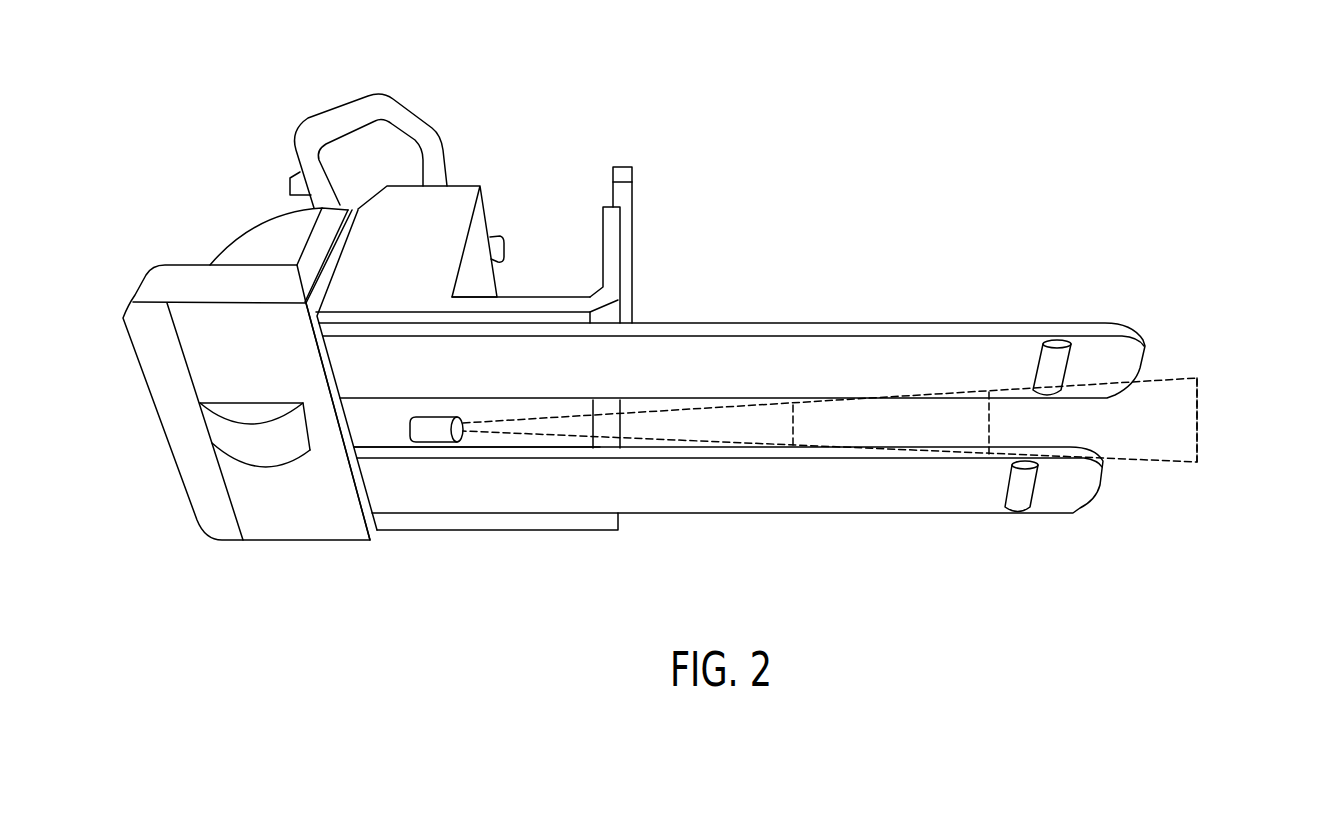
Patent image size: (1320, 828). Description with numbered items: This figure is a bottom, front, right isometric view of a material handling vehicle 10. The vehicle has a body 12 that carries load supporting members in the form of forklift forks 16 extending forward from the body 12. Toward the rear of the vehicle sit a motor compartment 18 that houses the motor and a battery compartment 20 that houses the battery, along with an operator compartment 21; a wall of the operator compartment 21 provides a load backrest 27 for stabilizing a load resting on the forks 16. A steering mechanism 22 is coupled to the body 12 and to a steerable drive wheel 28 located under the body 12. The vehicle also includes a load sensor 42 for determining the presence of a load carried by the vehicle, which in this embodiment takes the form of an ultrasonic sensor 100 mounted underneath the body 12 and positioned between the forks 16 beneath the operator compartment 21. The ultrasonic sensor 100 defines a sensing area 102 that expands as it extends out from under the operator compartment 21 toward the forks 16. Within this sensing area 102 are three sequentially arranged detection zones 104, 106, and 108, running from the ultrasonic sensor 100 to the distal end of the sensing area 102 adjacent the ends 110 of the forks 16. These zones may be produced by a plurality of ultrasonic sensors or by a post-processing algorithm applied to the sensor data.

The material handling vehicle 10 is at (616, 85).
The body 12 is at (384, 555).
The forklift forks 16 is at (865, 352).
The motor compartment 18 is at (265, 233).
The battery compartment 20 is at (452, 200).
The operator compartment 21 is at (542, 292).
The steering mechanism 22 is at (435, 101).
The load backrest 27 is at (632, 207).
The steerable drive wheel 28 is at (250, 450).
The load sensor 42 is at (431, 449).
The ultrasonic sensor 100 is at (437, 427).
The sensing area 102 is at (1170, 371).
The detection zone 104 is at (752, 423).
The detection zone 106 is at (903, 421).
The detection zone 108 is at (1170, 455).
The ends of the load supporting members 110 is at (1148, 342).